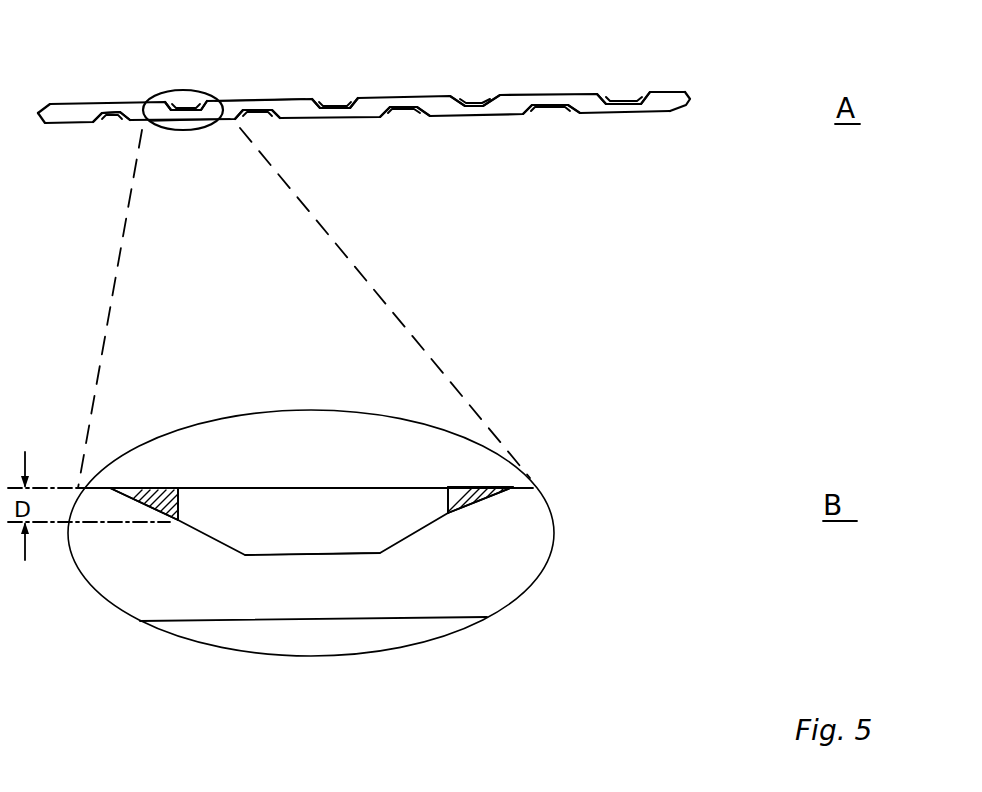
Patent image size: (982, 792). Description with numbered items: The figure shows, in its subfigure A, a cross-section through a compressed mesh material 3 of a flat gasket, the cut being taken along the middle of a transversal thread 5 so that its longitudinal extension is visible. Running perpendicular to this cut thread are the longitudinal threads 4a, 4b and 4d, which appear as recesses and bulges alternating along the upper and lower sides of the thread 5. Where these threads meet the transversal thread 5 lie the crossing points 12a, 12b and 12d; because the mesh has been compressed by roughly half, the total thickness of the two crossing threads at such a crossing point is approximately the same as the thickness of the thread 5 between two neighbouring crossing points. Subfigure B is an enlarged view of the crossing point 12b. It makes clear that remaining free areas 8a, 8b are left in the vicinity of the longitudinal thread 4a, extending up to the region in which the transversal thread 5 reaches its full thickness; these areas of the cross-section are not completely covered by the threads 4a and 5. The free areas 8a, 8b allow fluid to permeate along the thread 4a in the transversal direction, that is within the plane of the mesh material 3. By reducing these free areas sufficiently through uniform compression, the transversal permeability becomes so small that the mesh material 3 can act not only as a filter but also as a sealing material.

The mesh material 3 is at (662, 92).
The transversal thread 5 is at (690, 103).
The longitudinal thread 4a is at (177, 108).
The longitudinal thread 4b is at (257, 120).
The longitudinal thread 4d is at (322, 97).
The crossing point 12a is at (105, 103).
The crossing point 12b is at (180, 113).
The crossing point 12d is at (253, 102).
The remaining free area 8a is at (138, 488).
The remaining free area 8b is at (465, 485).